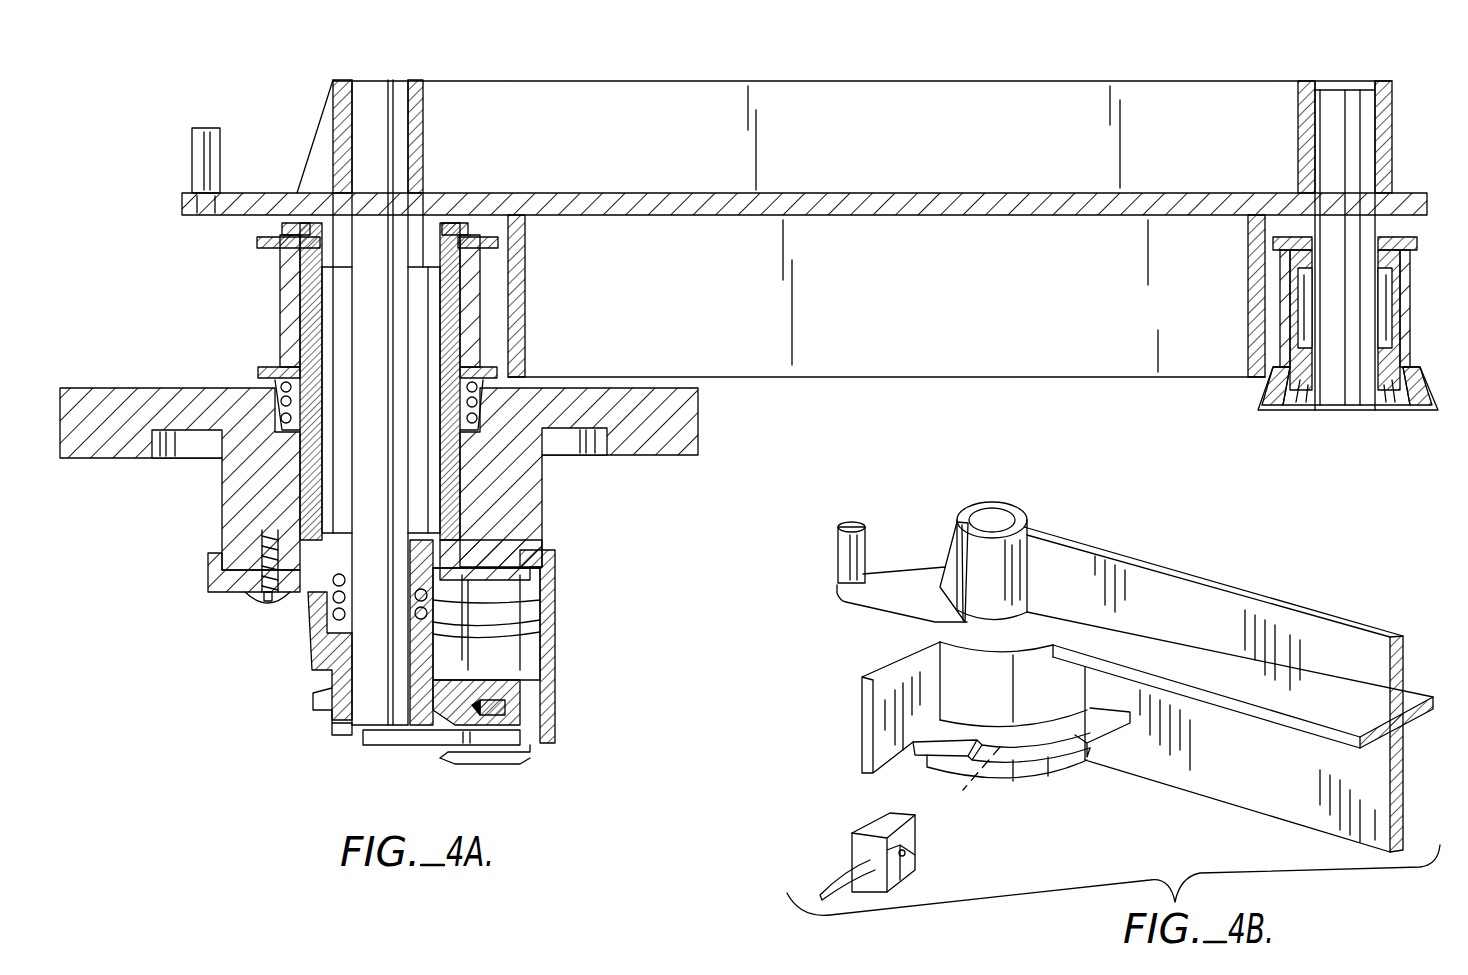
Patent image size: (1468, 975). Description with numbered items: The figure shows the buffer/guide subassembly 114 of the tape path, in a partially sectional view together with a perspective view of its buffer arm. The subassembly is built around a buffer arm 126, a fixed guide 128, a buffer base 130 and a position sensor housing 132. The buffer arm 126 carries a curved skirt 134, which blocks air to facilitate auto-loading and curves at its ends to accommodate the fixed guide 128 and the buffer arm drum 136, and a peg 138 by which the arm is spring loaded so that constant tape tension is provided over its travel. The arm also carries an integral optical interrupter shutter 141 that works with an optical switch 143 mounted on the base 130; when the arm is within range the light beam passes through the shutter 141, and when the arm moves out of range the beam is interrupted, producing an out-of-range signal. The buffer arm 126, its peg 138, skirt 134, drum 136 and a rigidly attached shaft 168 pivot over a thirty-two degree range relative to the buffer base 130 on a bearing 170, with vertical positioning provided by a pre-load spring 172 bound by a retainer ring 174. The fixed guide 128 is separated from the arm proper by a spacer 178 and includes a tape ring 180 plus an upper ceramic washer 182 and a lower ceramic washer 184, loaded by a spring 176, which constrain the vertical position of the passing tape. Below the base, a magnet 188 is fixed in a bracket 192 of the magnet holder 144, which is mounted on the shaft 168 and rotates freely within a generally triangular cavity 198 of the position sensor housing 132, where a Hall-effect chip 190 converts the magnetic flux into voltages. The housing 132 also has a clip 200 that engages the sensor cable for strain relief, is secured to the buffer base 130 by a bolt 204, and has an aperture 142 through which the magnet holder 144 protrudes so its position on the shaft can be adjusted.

In FIG. 4A, the buffer/guide subassembly 114 is at (218, 828).
In FIG. 4A, the buffer arm 126 is at (1005, 78).
In FIG. 4B, the buffer arm 126 is at (1175, 547).
In FIG. 4A, the fixed guide 128 is at (280, 283).
In FIG. 4A, the buffer base 130 is at (218, 502).
In FIG. 4A, the position sensor housing 132 is at (552, 585).
In FIG. 4A, the skirt 134 is at (1022, 312).
In FIG. 4A, the buffer arm drum 136 is at (1258, 400).
In FIG. 4A, the peg 138 is at (188, 147).
In FIG. 4B, the peg 138 is at (848, 527).
In FIG. 4B, the optical interrupter shutter 141 is at (1037, 742).
In FIG. 4A, the aperture 142 is at (305, 718).
In FIG. 4B, the optical switch 143 is at (908, 872).
In FIG. 4A, the magnet holder 144 is at (333, 683).
In FIG. 4A, the shaft 168 is at (378, 80).
In FIG. 4A, the bearing 170 is at (548, 570).
In FIG. 4A, the pre-load spring 172 is at (490, 606).
In FIG. 4A, the retainer ring 174 is at (480, 633).
In FIG. 4A, the spring 176 is at (280, 392).
In FIG. 4A, the spacer 178 is at (282, 228).
In FIG. 4A, the tape ring 180 is at (300, 318).
In FIG. 4A, the upper ceramic washer 182 is at (258, 243).
In FIG. 4A, the lower ceramic washer 184 is at (262, 370).
In FIG. 4A, the magnet 188 is at (505, 712).
In FIG. 4A, the Hall-effect chip 190 is at (470, 752).
In FIG. 4A, the bracket 192 is at (505, 690).
In FIG. 4A, the cavity 198 is at (490, 660).
In FIG. 4A, the clip 200 is at (512, 765).
In FIG. 4A, the bolt 204 is at (262, 600).